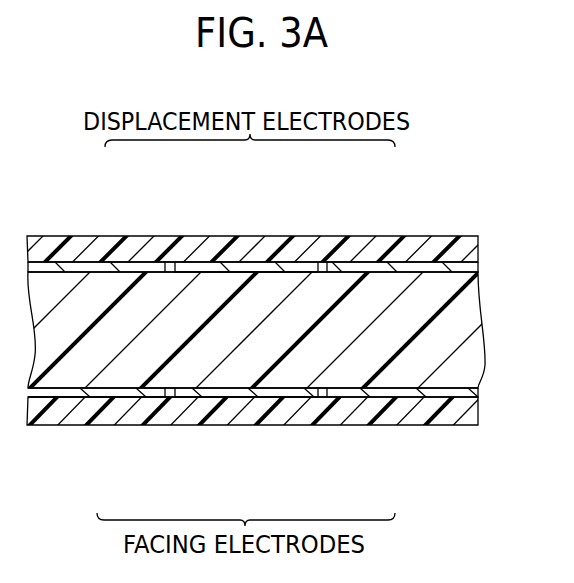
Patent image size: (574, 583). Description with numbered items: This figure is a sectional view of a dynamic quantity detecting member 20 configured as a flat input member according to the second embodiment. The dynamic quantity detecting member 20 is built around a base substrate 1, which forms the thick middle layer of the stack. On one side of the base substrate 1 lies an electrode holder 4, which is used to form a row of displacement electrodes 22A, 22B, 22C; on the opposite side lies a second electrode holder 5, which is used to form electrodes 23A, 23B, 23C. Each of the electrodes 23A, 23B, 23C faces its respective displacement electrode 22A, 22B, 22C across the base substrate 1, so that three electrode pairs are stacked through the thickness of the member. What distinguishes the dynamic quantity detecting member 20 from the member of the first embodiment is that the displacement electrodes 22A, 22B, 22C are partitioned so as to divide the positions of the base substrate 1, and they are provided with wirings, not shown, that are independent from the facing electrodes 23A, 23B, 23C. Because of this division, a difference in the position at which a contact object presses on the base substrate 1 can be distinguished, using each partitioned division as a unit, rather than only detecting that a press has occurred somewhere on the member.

The dynamic quantity detecting member 20 is at (468, 218).
The electrode holder 4 is at (467, 248).
The base substrate 1 is at (465, 318).
The electrode holder 5 is at (467, 417).
The displacement electrode 22A is at (128, 265).
The displacement electrode 22B is at (243, 270).
The displacement electrode 22C is at (358, 270).
The electrode 23A is at (127, 393).
The electrode 23B is at (240, 393).
The electrode 23C is at (358, 393).